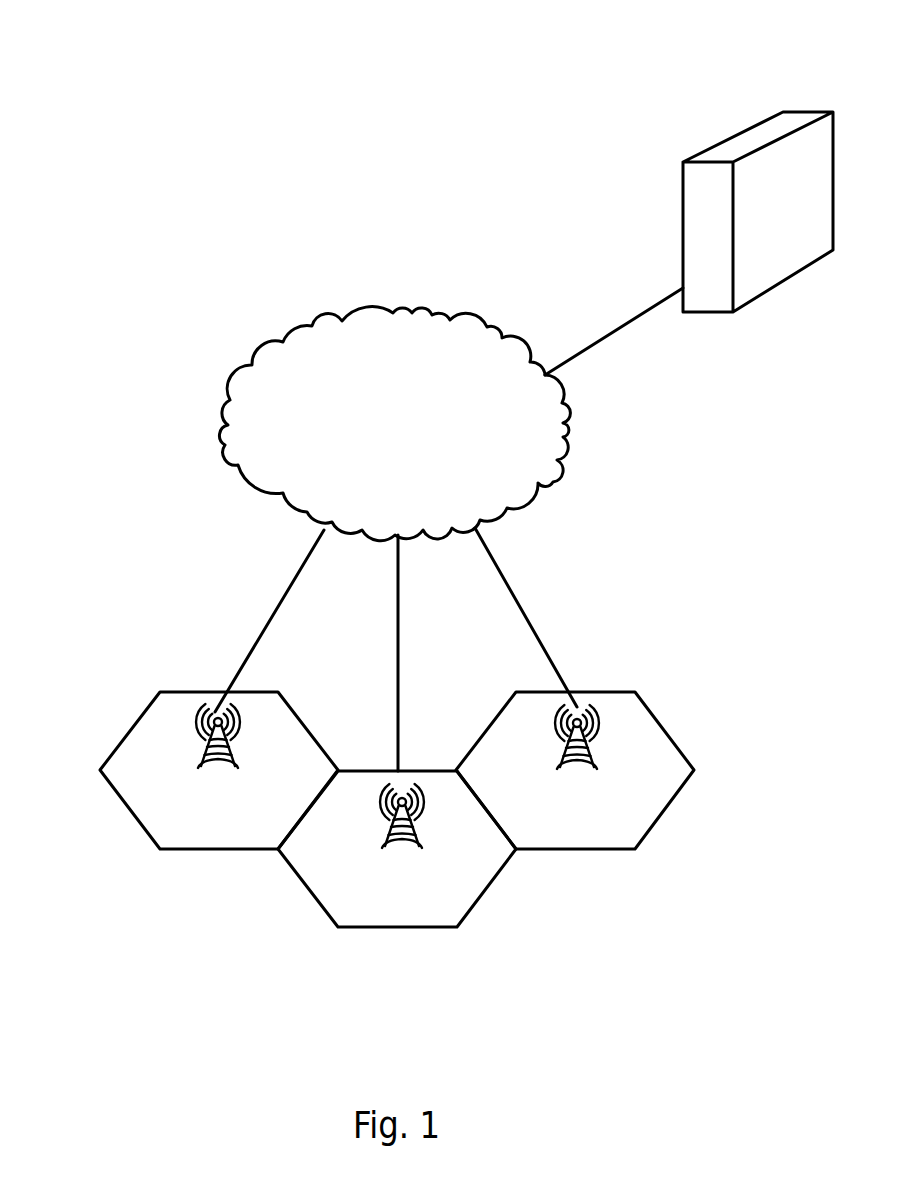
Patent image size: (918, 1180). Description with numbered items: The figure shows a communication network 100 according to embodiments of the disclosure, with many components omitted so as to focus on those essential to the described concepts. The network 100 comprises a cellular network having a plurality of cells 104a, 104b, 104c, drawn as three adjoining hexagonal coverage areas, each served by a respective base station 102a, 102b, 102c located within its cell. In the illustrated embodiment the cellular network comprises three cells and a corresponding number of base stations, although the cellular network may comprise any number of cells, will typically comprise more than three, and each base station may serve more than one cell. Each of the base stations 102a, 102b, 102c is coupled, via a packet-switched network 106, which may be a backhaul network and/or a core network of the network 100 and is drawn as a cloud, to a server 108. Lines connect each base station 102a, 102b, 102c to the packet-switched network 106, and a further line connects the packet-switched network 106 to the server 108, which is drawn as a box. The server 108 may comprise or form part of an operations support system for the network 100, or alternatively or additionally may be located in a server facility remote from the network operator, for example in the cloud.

The communication network 100 is at (83, 35).
The base station 102a is at (218, 770).
The base station 102b is at (402, 848).
The base station 102c is at (577, 770).
The cell 104a is at (188, 692).
The cell 104b is at (382, 772).
The cell 104c is at (608, 692).
The packet-switched network 106 is at (262, 342).
The server 108 is at (765, 118).